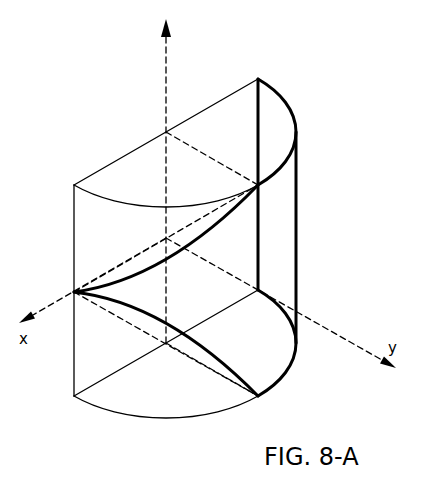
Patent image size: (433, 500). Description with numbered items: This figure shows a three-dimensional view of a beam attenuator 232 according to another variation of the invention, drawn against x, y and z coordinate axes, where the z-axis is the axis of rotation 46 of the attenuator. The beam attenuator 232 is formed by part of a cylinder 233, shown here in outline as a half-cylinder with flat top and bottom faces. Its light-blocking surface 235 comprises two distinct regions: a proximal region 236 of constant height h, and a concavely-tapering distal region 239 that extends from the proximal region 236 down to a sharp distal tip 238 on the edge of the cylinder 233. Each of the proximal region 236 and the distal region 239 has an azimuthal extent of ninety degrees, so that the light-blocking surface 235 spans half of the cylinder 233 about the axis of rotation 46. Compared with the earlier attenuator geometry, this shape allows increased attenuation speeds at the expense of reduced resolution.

The axis of rotation 46 is at (165, 66).
The beam attenuator 232 is at (348, 159).
The cylinder 233 is at (112, 413).
The light-blocking surface 235 is at (298, 261).
The proximal region 236 is at (276, 128).
The distal tip 238 is at (74, 294).
The distal region 239 is at (148, 302).